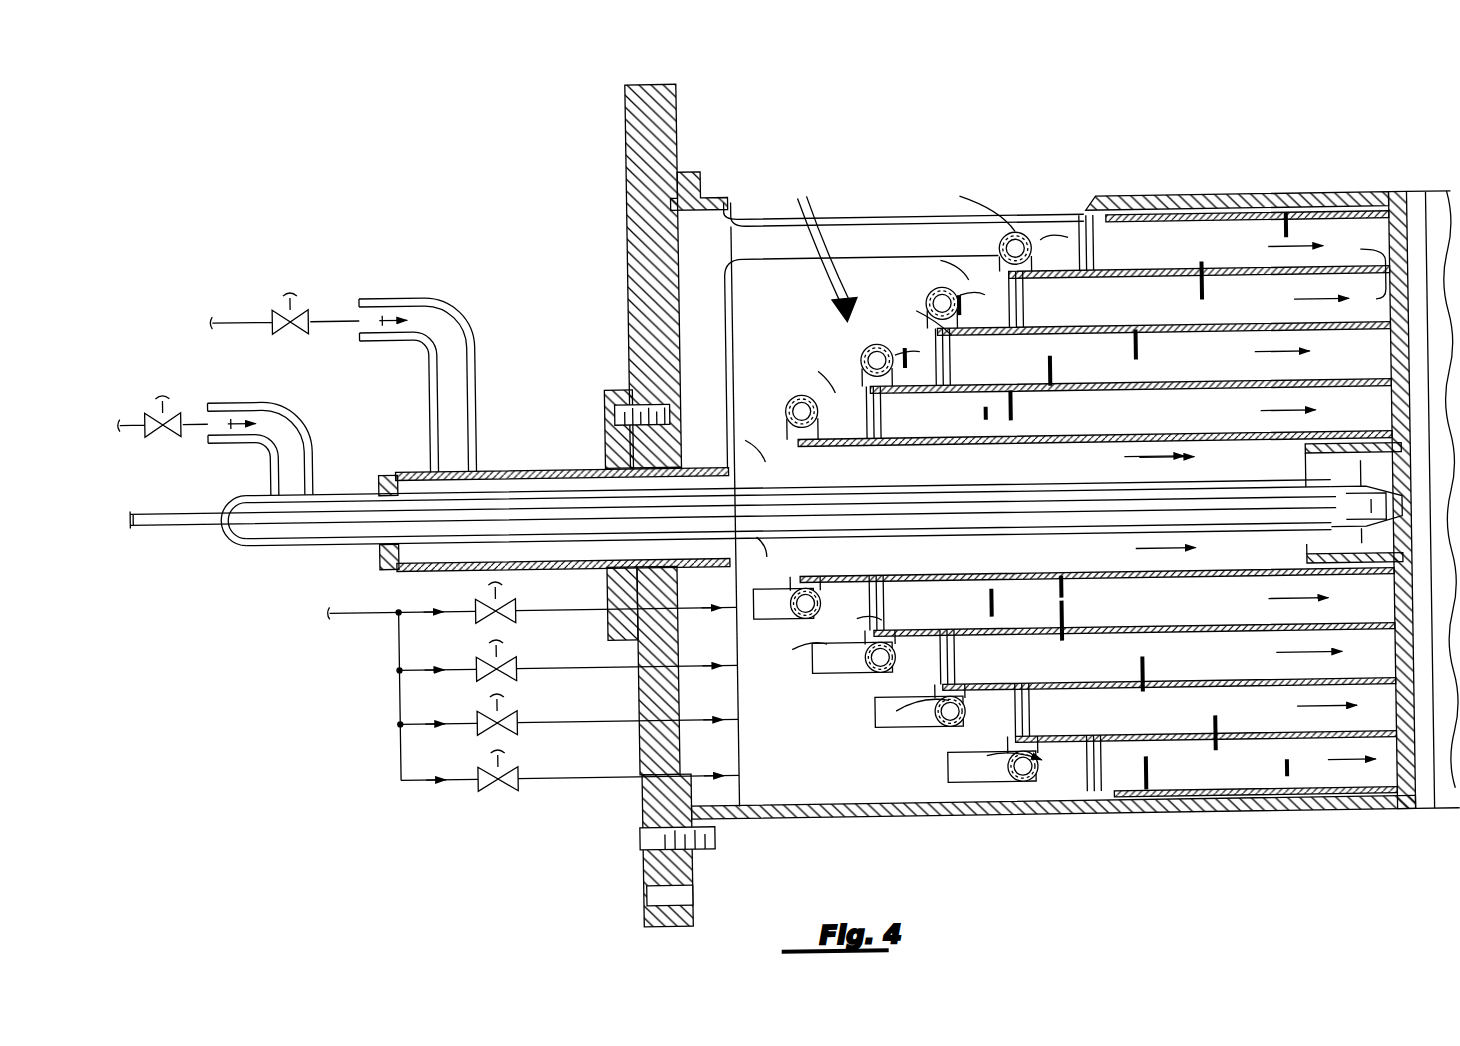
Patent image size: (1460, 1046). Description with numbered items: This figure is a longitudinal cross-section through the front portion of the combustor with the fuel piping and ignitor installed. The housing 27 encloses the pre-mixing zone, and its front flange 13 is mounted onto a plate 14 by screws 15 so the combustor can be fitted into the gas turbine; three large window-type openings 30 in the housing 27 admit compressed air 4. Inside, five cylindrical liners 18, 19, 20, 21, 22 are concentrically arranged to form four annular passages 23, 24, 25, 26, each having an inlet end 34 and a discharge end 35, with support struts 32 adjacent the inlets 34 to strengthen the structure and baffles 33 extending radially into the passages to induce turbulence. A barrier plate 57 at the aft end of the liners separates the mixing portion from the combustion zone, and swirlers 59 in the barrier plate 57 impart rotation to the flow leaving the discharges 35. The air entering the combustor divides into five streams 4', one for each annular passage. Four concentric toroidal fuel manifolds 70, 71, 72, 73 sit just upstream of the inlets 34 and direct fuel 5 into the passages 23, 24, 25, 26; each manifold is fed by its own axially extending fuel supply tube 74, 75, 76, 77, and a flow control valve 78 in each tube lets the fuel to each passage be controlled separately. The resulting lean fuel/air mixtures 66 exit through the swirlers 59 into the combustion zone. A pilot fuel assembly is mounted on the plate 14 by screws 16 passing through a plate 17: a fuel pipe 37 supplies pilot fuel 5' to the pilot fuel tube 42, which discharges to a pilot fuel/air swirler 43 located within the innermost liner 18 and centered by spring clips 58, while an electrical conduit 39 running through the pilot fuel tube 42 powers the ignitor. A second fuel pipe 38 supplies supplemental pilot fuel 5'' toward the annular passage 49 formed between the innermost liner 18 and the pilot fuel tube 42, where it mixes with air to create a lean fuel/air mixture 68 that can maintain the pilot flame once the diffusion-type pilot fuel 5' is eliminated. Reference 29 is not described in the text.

The plate 14 is at (680, 98).
The front flange 13 is at (697, 172).
The plate 17 is at (617, 384).
The screws 16 is at (604, 405).
The screws 15 is at (635, 834).
The window-type openings 30 is at (900, 207).
The inner liner 29 is at (785, 257).
The housing 27 is at (967, 816).
The discharge end 35 is at (1388, 361).
The barrier plate 57 is at (1420, 318).
The swirlers 59 is at (1389, 254).
The compressed air 4 is at (827, 232).
The air streams 4' is at (906, 466).
The cylindrical liner 22 is at (1154, 222).
The cylindrical liner 21 is at (1143, 279).
The cylindrical liner 20 is at (1054, 334).
The cylindrical liner 19 is at (998, 392).
The innermost liner 18 is at (855, 446).
The annular passage 26 is at (1257, 258).
The annular passage 25 is at (1265, 313).
The annular passage 24 is at (1222, 367).
The annular passage 23 is at (1158, 423).
The annular passage 49 is at (1050, 475).
The pilot fuel/air swirler 43 is at (1304, 552).
The lean fuel/air mixture 68 is at (1171, 442).
The spring clips 58 is at (1300, 453).
The inlet end 34 is at (1085, 233).
The support struts 32 is at (1099, 251).
The baffles 33 is at (1052, 369).
The fuel manifold 70 is at (787, 406).
The fuel manifold 71 is at (872, 346).
The fuel manifold 72 is at (931, 292).
The fuel manifold 73 is at (1003, 244).
The fuel supply tube 74 is at (779, 589).
The fuel supply tube 75 is at (840, 660).
The fuel supply tube 76 is at (894, 719).
The fuel supply tube 77 is at (951, 772).
The fuel/air mixtures 66 is at (1277, 658).
The pilot fuel tube 42 is at (314, 539).
The electrical conduit 39 is at (189, 517).
The fuel pipe 38 is at (398, 291).
The fuel pipe 37 is at (237, 396).
The flow control valve 78 is at (290, 302).
The fuel 5 is at (640, 581).
The pilot fuel 5' is at (223, 450).
The supplemental pilot fuel 5'' is at (393, 350).